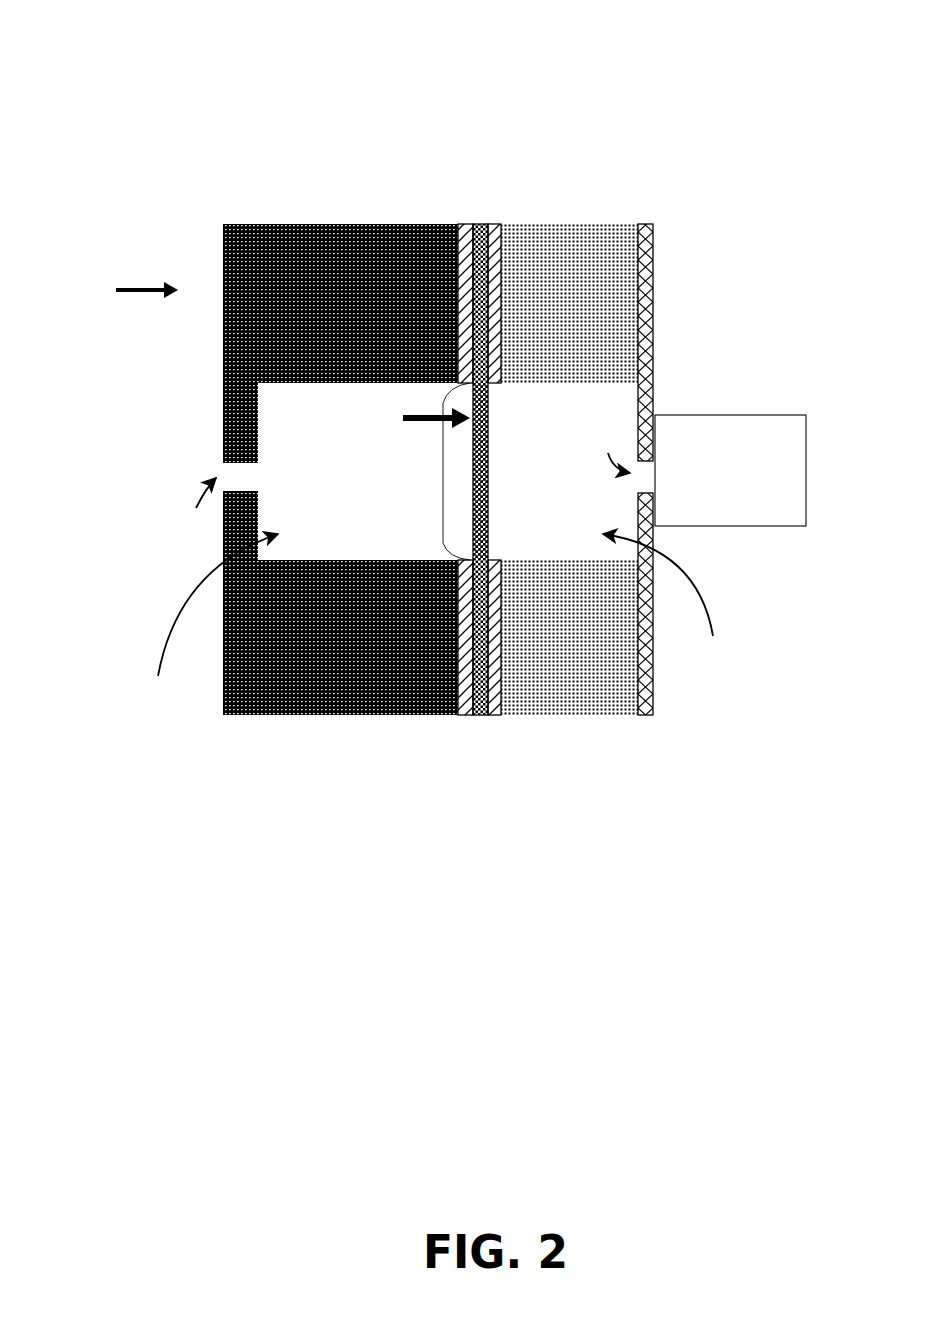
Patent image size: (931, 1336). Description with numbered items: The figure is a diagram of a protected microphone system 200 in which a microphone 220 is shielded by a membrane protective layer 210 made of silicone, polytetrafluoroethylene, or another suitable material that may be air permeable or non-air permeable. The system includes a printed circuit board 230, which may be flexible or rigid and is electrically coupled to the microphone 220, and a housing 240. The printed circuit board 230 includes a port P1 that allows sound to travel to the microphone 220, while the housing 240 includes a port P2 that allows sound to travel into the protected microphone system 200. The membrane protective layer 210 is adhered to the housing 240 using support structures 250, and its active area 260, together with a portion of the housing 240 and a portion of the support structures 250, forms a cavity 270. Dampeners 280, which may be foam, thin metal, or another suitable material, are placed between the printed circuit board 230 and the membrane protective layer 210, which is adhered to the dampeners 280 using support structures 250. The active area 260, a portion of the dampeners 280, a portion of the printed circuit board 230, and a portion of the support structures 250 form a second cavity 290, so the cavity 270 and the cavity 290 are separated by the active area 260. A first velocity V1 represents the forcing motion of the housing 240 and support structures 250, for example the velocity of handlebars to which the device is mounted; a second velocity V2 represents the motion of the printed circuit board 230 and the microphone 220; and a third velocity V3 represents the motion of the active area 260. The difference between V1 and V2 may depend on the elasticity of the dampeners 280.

The protected microphone system 200 is at (443, 399).
The membrane protective layer 210 is at (470, 708).
The microphone 220 is at (722, 406).
The printed circuit board 230 is at (638, 216).
The housing 240 is at (263, 216).
The support structures 250 is at (487, 216).
The active area 260 is at (435, 462).
The cavity 270 is at (203, 621).
The dampeners 280 is at (560, 708).
The cavity 290 is at (683, 602).
The port P1 is at (614, 452).
The port P2 is at (193, 507).
The first velocity V1 is at (129, 291).
The second velocity V2 is at (651, 739).
The third velocity V3 is at (420, 419).